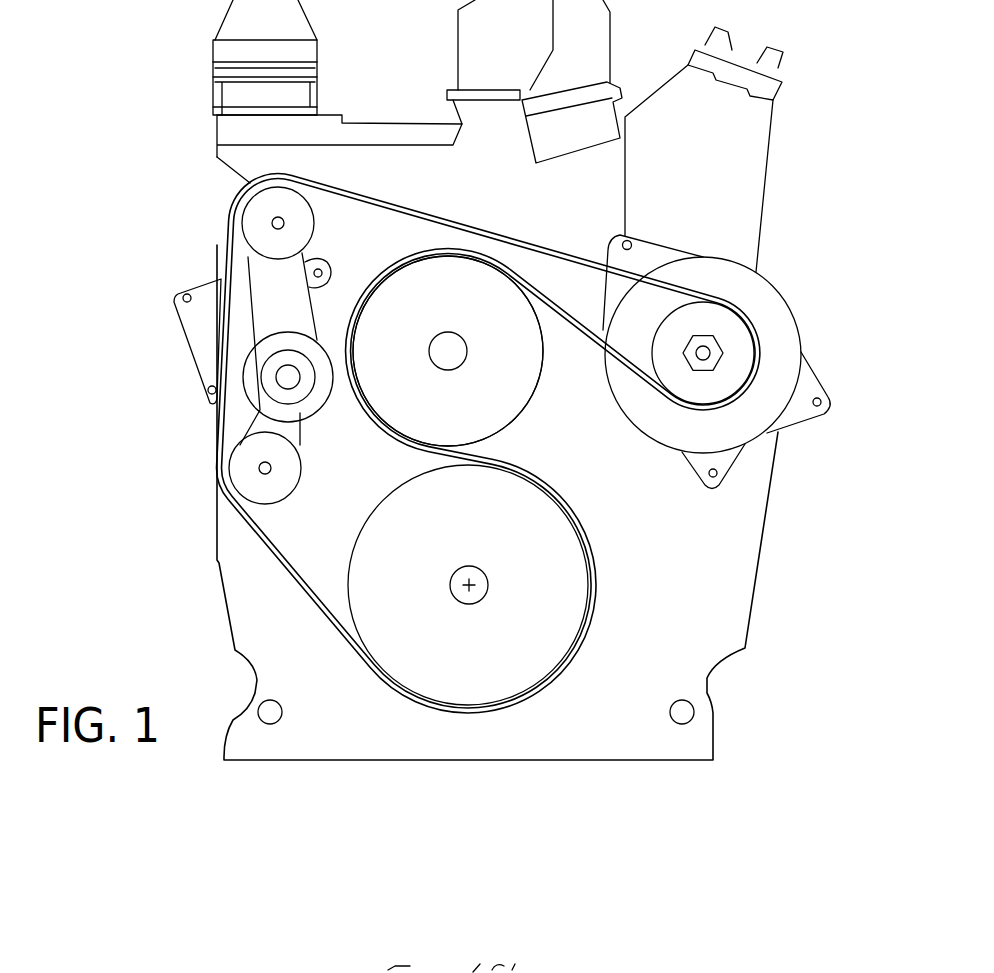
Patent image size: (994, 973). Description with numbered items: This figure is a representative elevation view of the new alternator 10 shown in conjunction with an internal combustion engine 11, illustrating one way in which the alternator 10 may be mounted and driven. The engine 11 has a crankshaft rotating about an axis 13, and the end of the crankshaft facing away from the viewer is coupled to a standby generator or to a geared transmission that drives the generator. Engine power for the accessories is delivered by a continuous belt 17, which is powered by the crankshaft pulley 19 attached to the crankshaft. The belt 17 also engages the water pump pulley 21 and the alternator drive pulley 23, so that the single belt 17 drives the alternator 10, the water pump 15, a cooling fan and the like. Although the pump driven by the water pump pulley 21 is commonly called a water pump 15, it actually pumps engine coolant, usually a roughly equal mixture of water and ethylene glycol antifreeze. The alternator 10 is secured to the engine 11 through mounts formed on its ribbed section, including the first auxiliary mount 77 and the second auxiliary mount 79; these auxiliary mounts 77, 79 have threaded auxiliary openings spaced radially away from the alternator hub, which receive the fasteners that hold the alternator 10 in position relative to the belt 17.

The alternator 10 is at (777, 280).
The internal combustion engine 11 is at (752, 532).
The axis 13 is at (477, 575).
The water pump 15 is at (440, 280).
The continuous belt 17 is at (250, 528).
The crankshaft pulley 19 is at (400, 485).
The water pump pulley 21 is at (530, 408).
The alternator drive pulley 23 is at (664, 312).
The first auxiliary mount 77 is at (823, 392).
The second auxiliary mount 79 is at (713, 490).